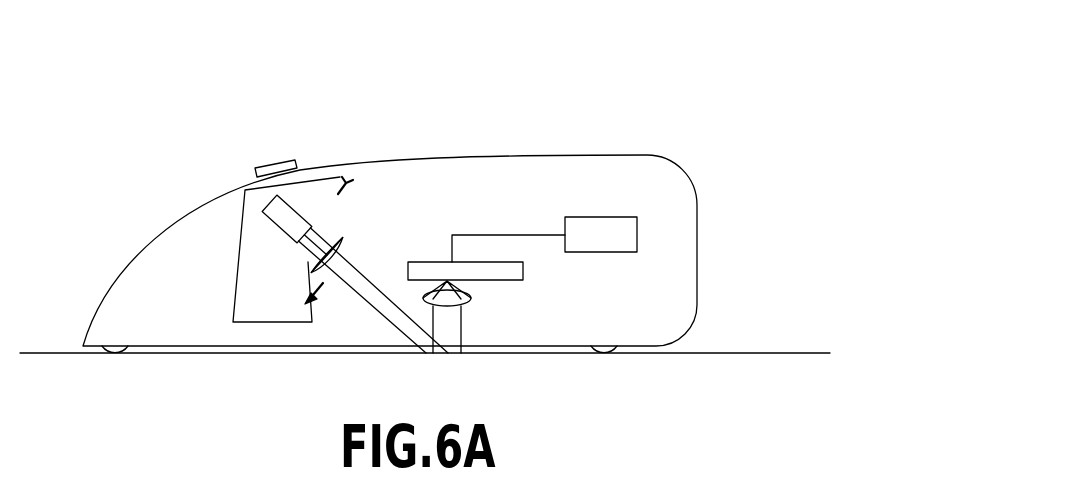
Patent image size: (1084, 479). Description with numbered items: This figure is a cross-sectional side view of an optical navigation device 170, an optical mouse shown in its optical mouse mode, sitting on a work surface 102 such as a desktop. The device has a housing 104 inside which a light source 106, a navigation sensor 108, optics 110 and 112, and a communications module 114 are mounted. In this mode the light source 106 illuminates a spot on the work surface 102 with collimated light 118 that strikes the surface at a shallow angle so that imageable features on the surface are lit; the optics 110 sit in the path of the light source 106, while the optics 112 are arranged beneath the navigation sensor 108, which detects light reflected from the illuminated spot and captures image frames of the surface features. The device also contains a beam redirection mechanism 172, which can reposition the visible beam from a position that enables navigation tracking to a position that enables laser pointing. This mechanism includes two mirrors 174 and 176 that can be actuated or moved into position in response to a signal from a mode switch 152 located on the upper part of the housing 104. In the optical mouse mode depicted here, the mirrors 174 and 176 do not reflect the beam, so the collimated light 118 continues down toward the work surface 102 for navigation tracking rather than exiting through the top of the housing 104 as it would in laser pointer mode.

The optical navigation device 170 is at (562, 56).
The housing 104 is at (577, 155).
The work surface 102 is at (758, 352).
The mode switch 152 is at (270, 162).
The mirror 176 is at (354, 180).
The beam redirection mechanism 172 is at (236, 287).
The light source 106 is at (301, 211).
The collimated light 118 is at (383, 285).
The optics 110 is at (310, 262).
The mirror 174 is at (328, 305).
The navigation sensor 108 is at (524, 270).
The optics 112 is at (472, 297).
The communications module 114 is at (583, 217).